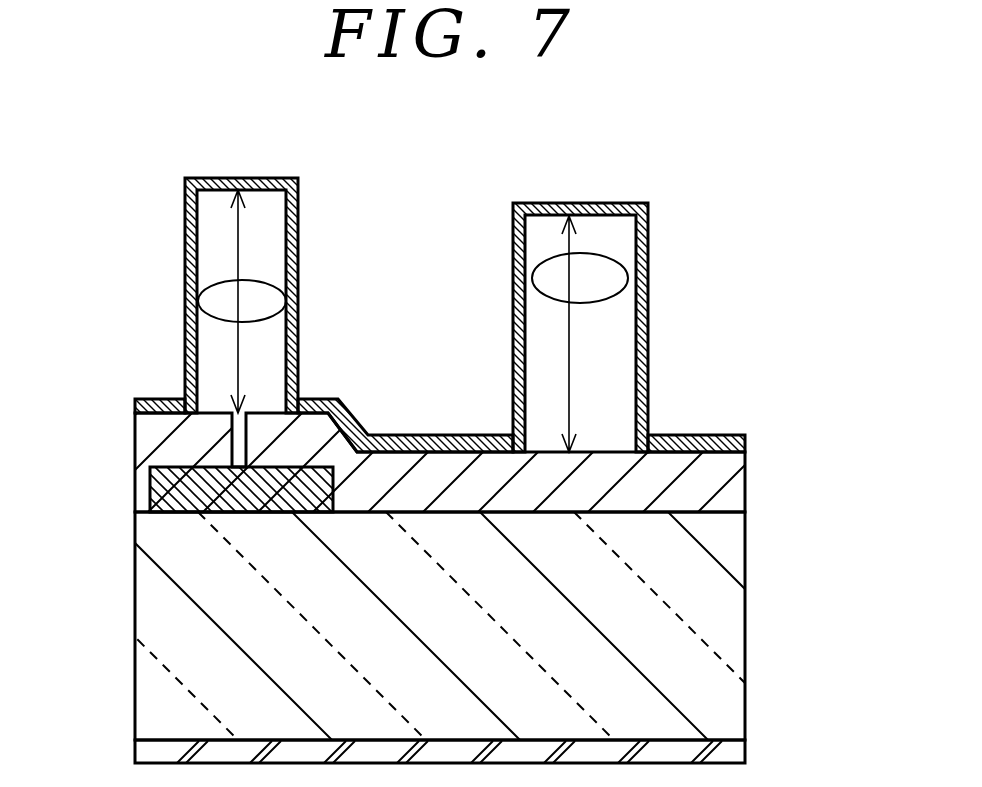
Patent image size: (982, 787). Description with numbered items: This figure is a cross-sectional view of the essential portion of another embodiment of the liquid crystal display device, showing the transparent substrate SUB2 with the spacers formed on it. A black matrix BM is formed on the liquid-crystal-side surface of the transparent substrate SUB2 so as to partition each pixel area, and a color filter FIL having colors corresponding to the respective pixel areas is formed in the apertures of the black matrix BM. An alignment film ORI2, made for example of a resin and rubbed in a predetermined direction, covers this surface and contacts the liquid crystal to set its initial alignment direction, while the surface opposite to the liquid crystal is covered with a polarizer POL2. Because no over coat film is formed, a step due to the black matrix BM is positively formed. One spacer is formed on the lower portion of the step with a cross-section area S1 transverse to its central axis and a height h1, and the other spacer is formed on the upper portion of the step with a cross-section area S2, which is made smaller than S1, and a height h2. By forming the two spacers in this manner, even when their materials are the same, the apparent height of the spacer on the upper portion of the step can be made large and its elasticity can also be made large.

The alignment film ORI2 is at (185, 388).
The color filter FIL is at (135, 440).
The black matrix BM is at (255, 513).
The transparent substrate SUB2 is at (745, 587).
The polarizer POL2 is at (745, 755).
The cross-section area of spacer SOC(1) S1 is at (633, 272).
The cross-section area of spacer SOC(2) S2 is at (285, 289).
The height of spacer SOC(1) h1 is at (584, 334).
The height of spacer SOC(2) h2 is at (255, 301).